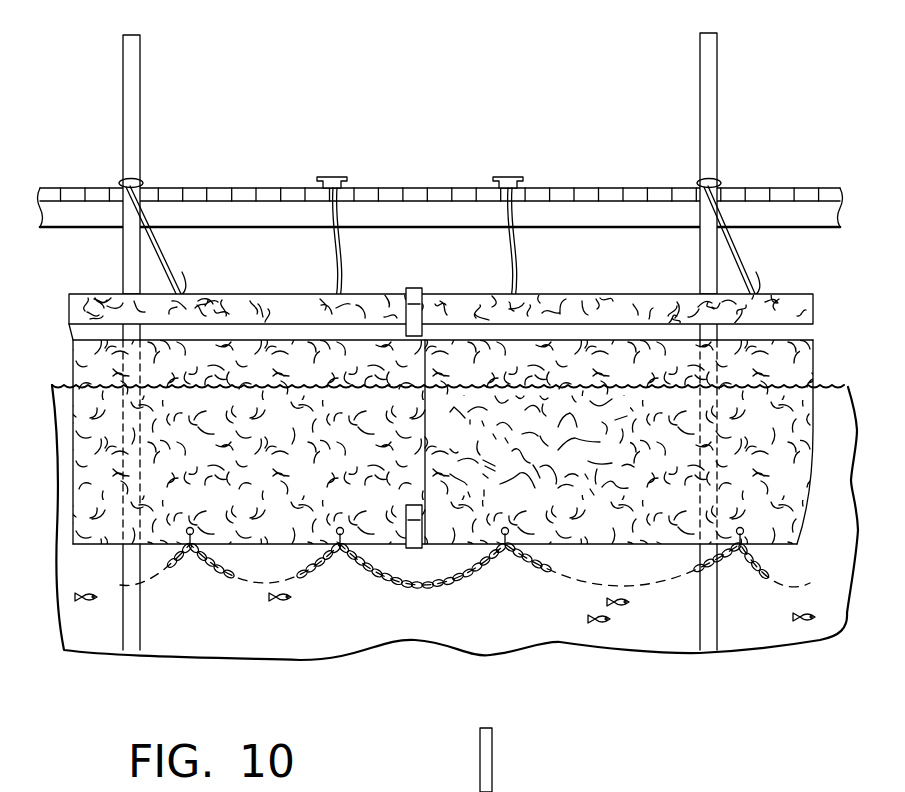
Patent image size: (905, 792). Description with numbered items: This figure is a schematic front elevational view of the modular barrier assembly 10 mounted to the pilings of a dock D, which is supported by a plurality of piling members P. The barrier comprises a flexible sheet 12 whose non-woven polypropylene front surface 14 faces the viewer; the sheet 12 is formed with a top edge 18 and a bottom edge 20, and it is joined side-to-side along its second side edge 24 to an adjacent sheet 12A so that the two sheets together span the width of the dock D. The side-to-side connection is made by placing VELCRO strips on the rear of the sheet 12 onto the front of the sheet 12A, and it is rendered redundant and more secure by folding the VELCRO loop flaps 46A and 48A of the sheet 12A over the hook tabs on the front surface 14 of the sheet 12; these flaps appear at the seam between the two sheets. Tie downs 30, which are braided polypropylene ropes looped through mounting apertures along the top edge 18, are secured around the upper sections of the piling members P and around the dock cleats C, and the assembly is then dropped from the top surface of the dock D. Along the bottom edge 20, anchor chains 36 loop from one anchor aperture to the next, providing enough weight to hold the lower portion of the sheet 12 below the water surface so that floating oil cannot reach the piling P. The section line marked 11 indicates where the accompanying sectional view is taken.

The pond 10 is at (77, 497).
The cover 12 is at (81, 376).
The cover edge 12A is at (812, 360).
The cover body material 14 is at (108, 446).
The flotation top edge of cover 18 is at (85, 294).
The bottom edge of cover 20 is at (92, 544).
The seam 24 is at (427, 395).
The tether rope 30 is at (172, 264).
The weight chain 36 is at (470, 575).
The upper connector clip 46A is at (415, 292).
The lower connector clip 48A is at (410, 545).
The post P is at (141, 42).
The cleat C is at (336, 177).
The dock D is at (748, 167).
The section line 11- 11 is at (262, 128).